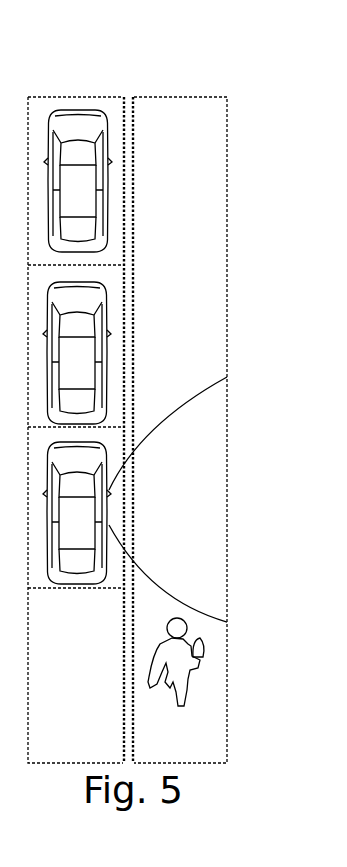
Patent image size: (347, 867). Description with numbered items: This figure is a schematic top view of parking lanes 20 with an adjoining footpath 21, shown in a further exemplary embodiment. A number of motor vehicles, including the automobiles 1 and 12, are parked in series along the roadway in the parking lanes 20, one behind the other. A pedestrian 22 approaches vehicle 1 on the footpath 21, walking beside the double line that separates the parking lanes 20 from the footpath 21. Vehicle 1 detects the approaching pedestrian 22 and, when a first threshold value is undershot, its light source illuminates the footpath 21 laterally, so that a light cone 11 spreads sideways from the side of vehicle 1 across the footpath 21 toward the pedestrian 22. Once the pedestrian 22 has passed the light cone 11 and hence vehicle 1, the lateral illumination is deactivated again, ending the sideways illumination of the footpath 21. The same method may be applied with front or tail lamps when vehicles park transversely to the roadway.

The automobile 1 is at (77, 513).
The light cone 11 is at (153, 431).
The automobile 12 is at (77, 353).
The parking lanes 20 is at (43, 103).
The footpath 21 is at (162, 103).
The pedestrian 22 is at (200, 657).